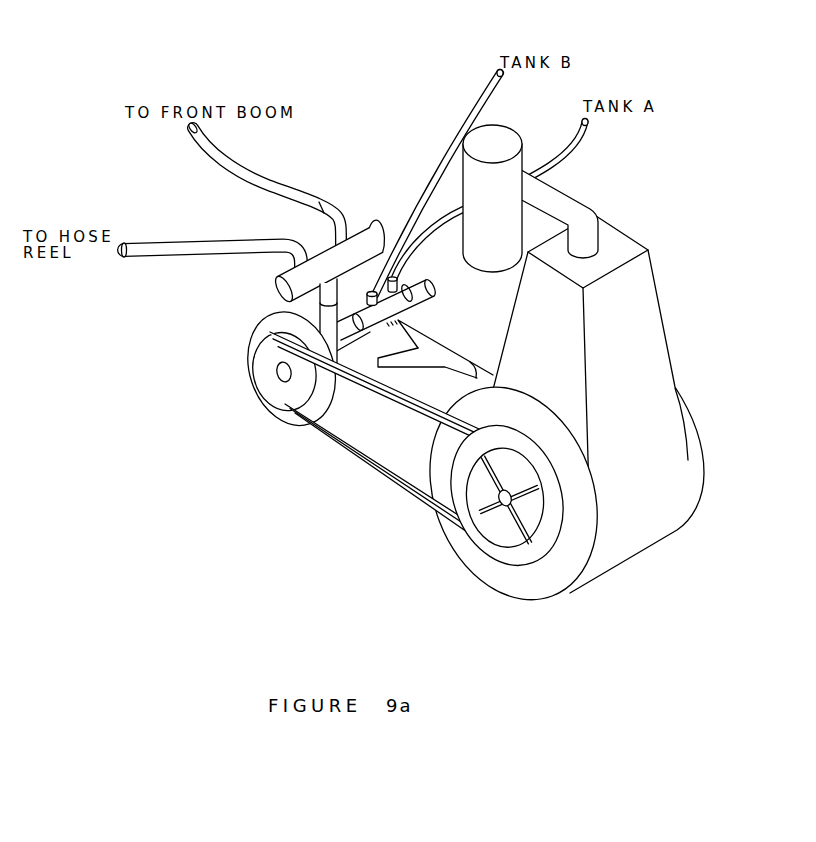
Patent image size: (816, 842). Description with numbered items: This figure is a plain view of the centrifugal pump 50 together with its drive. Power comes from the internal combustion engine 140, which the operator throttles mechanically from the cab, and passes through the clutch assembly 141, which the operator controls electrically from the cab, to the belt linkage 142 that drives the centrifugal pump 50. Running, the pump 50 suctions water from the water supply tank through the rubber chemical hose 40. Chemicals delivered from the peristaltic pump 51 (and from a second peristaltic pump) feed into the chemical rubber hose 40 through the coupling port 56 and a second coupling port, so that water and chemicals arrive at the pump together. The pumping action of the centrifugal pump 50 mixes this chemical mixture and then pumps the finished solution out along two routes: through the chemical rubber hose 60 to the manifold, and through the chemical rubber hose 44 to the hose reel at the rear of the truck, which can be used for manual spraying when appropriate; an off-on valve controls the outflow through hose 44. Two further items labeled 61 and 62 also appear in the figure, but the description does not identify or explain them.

The chemical rubber hose 40 is at (443, 349).
The chemical rubber hose 44 is at (145, 243).
The centrifugal pump 50 is at (253, 325).
The peristaltic pump 51 is at (361, 303).
The coupling port 56 is at (398, 283).
The chemical rubber hose 60 is at (243, 160).
The hose to tank A 61 is at (581, 152).
The hose to tank B 62 is at (490, 82).
The internal combustion engine 140 is at (690, 486).
The clutch assembly 141 is at (500, 547).
The belt linkage 142 is at (363, 462).